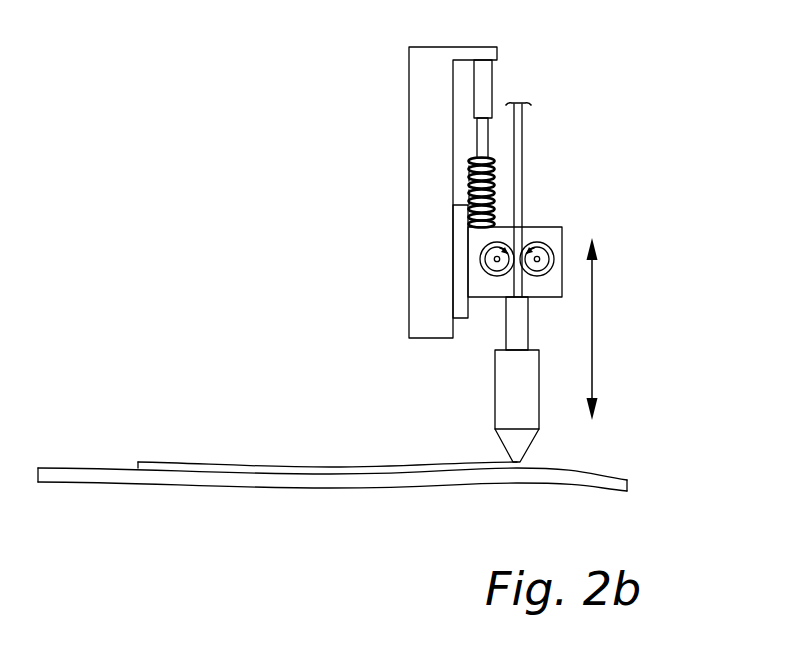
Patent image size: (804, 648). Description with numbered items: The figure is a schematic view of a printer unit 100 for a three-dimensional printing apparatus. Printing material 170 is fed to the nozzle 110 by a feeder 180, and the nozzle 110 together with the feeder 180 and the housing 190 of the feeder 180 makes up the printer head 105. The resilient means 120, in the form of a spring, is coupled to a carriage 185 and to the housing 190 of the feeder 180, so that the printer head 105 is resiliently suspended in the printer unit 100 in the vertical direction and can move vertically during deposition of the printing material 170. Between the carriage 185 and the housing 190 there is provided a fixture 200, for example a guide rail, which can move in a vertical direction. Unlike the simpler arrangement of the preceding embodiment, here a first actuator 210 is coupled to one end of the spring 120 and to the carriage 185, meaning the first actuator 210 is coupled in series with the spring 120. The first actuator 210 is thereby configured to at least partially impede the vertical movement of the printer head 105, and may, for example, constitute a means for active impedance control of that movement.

The printer unit 100 is at (676, 73).
The printer head 105 is at (628, 228).
The nozzle 110 is at (488, 440).
The resilient means 120 is at (470, 172).
The printing material 170 is at (522, 144).
The feeder 180 is at (538, 244).
The carriage 185 is at (409, 221).
The housing 190 is at (548, 284).
The fixture 200 is at (453, 297).
The first actuator 210 is at (482, 100).